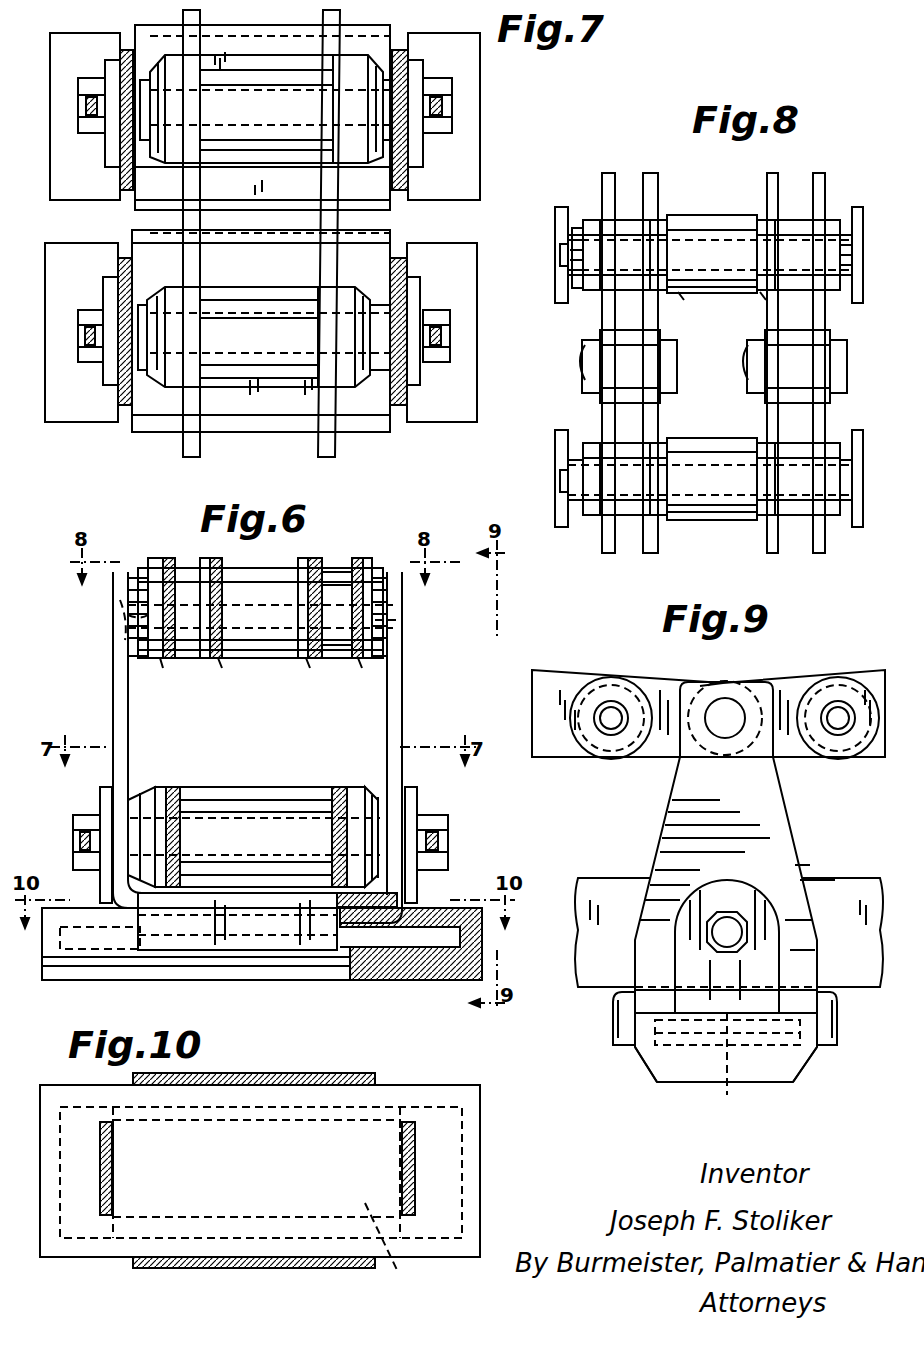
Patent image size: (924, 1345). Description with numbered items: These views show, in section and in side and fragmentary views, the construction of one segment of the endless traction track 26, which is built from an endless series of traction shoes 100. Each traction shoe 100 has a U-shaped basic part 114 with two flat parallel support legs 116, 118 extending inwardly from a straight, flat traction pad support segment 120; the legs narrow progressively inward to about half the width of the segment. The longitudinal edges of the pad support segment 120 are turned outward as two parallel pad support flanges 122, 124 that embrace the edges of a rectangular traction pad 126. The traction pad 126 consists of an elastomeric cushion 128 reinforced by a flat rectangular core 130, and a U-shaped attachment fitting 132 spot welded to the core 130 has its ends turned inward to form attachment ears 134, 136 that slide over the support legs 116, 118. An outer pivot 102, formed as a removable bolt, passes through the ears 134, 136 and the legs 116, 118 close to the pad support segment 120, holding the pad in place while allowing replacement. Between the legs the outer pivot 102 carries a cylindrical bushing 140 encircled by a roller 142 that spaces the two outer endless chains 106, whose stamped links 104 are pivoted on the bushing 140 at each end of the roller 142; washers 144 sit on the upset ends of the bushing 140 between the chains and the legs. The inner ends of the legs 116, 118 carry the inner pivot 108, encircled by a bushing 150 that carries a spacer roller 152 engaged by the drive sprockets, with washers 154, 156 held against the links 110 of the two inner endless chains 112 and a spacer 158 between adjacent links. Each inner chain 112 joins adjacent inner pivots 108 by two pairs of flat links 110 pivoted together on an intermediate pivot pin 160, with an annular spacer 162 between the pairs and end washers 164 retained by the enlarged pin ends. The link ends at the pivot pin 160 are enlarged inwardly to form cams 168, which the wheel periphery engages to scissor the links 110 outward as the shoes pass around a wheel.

In FIG. 6, the endless traction track 26 is at (403, 672).
In FIG. 7, the traction shoe 100 is at (449, 43).
In FIG. 6, the traction shoe 100 is at (108, 698).
In FIG. 9, the traction shoe 100 is at (640, 1072).
In FIG. 10, the traction shoe 100 is at (55, 1258).
In FIG. 7, the outer pivot 102 is at (450, 110).
In FIG. 6, the outer pivot 102 is at (448, 840).
In FIG. 9, the outer pivot 102 is at (727, 915).
In FIG. 7, the link 104 is at (192, 43).
In FIG. 6, the link 104 is at (170, 862).
In FIG. 9, the link 104 is at (612, 925).
In FIG. 6, the outer endless chain 106 is at (178, 780).
In FIG. 9, the outer endless chain 106 is at (612, 990).
In FIG. 8, the inner pivot 108 is at (560, 257).
In FIG. 6, the inner pivot 108 is at (398, 613).
In FIG. 9, the inner pivot 108 is at (730, 740).
In FIG. 8, the link 110 is at (600, 310).
In FIG. 6, the link 110 is at (165, 560).
In FIG. 9, the link 110 is at (562, 757).
In FIG. 8, the inner endless chain 112 is at (673, 300).
In FIG. 6, the inner endless chain 112 is at (160, 660).
In FIG. 9, the inner endless chain 112 is at (622, 668).
In FIG. 6, the basic part 114 is at (405, 703).
In FIG. 9, the basic part 114 is at (655, 838).
In FIG. 7, the support leg 116 is at (125, 180).
In FIG. 8, the support leg 116 is at (560, 215).
In FIG. 6, the support leg 116 is at (128, 720).
In FIG. 7, the support leg 118 is at (405, 180).
In FIG. 8, the support leg 118 is at (858, 217).
In FIG. 6, the support leg 118 is at (387, 726).
In FIG. 6, the traction pad support segment 120 is at (400, 895).
In FIG. 9, the traction pad support segment 120 is at (800, 985).
In FIG. 9, the pad support flange 122 is at (622, 1045).
In FIG. 10, the pad support flange 122 is at (200, 1268).
In FIG. 9, the pad support flange 124 is at (832, 1048).
In FIG. 10, the pad support flange 124 is at (370, 1073).
In FIG. 7, the traction pad 126 is at (482, 160).
In FIG. 6, the traction pad 126 is at (398, 985).
In FIG. 9, the traction pad 126 is at (778, 1080).
In FIG. 6, the cushion 128 is at (365, 985).
In FIG. 9, the cushion 128 is at (677, 1082).
In FIG. 10, the cushion 128 is at (482, 1160).
In FIG. 6, the core 130 is at (460, 940).
In FIG. 9, the core 130 is at (727, 1069).
In FIG. 10, the core 130 is at (462, 1113).
In FIG. 6, the attachment fitting 132 is at (400, 938).
In FIG. 9, the attachment fitting 132 is at (800, 1022).
In FIG. 10, the attachment fitting 132 is at (403, 1244).
In FIG. 7, the attachment ear 134 is at (110, 140).
In FIG. 6, the attachment ear 134 is at (102, 790).
In FIG. 10, the attachment ear 134 is at (112, 1143).
In FIG. 7, the attachment ear 136 is at (420, 148).
In FIG. 6, the attachment ear 136 is at (418, 803).
In FIG. 10, the attachment ear 136 is at (402, 1148).
In FIG. 7, the bushing 140 is at (385, 145).
In FIG. 6, the bushing 140 is at (138, 810).
In FIG. 7, the roller 142 is at (222, 285).
In FIG. 6, the roller 142 is at (245, 795).
In FIG. 7, the washer 144 is at (155, 62).
In FIG. 6, the washer 144 is at (378, 795).
In FIG. 8, the bushing 150 is at (570, 280).
In FIG. 6, the bushing 150 is at (132, 596).
In FIG. 8, the spacer roller 152 is at (680, 215).
In FIG. 6, the spacer roller 152 is at (268, 660).
In FIG. 8, the washer 154 is at (580, 295).
In FIG. 6, the washer 154 is at (140, 650).
In FIG. 8, the washer 156 is at (840, 220).
In FIG. 6, the washer 156 is at (378, 660).
In FIG. 8, the spacer 158 is at (628, 215).
In FIG. 6, the spacer 158 is at (330, 568).
In FIG. 8, the pivot pin 160 is at (582, 360).
In FIG. 9, the pivot pin 160 is at (605, 718).
In FIG. 8, the annular spacer 162 is at (780, 335).
In FIG. 8, the end washer 164 is at (582, 347).
In FIG. 9, the cam 168 is at (570, 680).